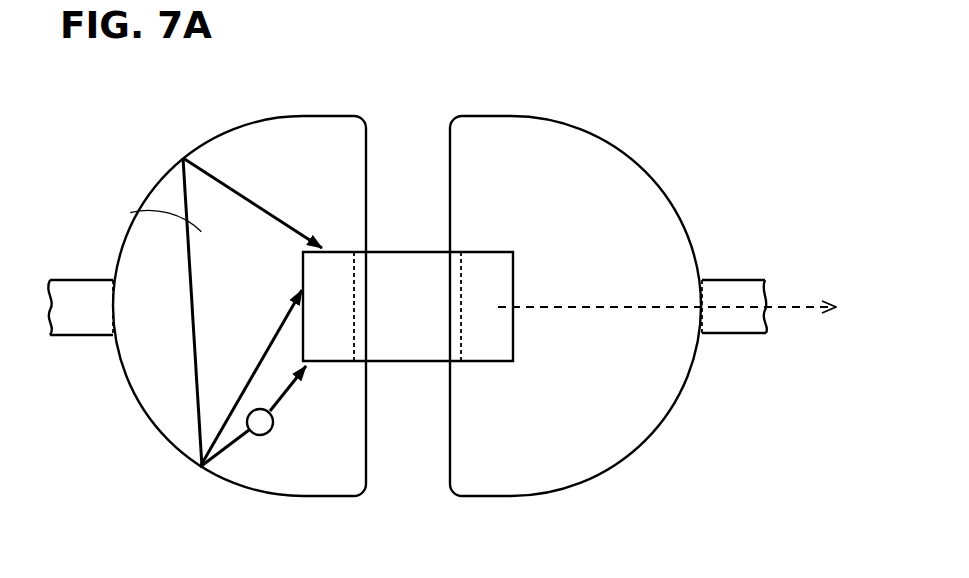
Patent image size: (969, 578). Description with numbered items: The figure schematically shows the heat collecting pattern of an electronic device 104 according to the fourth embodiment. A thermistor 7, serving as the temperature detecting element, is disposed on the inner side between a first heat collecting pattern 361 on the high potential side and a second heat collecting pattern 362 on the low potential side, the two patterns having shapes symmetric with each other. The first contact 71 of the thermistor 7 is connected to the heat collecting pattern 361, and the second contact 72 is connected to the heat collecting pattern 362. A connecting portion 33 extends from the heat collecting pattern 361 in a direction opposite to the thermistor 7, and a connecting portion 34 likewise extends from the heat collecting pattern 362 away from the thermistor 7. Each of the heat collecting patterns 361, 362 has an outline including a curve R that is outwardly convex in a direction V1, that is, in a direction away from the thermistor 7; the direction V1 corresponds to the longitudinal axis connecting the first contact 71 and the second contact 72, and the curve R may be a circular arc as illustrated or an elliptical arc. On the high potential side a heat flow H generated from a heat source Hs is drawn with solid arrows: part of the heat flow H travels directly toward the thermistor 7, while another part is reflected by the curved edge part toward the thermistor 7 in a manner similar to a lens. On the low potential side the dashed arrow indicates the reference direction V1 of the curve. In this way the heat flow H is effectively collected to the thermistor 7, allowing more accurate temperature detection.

The electronic device 104 is at (672, 80).
The first heat collecting pattern 361 is at (282, 143).
The second heat collecting pattern 362 is at (527, 133).
The curve R is at (652, 172).
The heat flow H is at (138, 208).
The heat source Hs is at (252, 437).
The connecting portion 33 is at (78, 298).
The connecting portion 34 is at (727, 293).
The thermistor 7 is at (405, 275).
The first contact 71 is at (327, 342).
The second contact 72 is at (490, 342).
The direction V1 is at (790, 312).